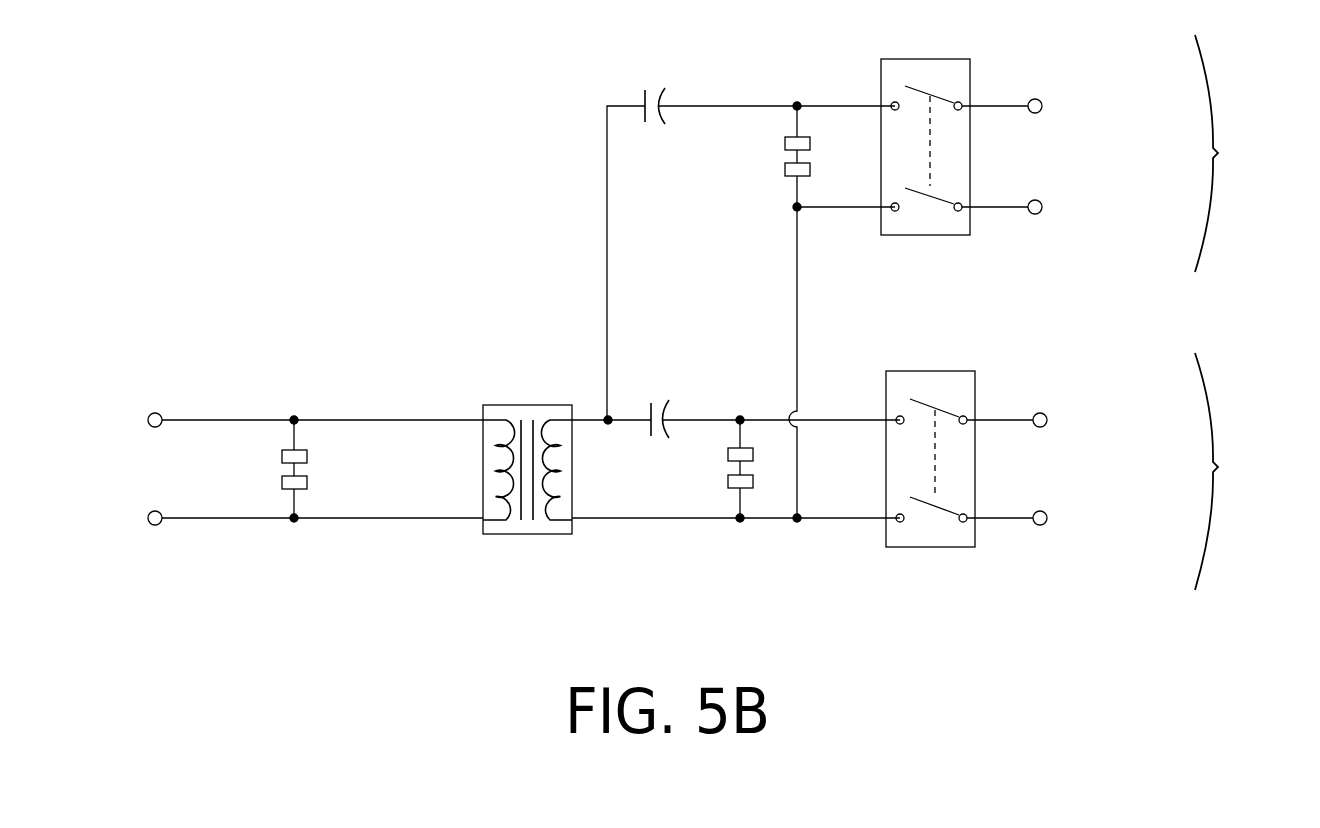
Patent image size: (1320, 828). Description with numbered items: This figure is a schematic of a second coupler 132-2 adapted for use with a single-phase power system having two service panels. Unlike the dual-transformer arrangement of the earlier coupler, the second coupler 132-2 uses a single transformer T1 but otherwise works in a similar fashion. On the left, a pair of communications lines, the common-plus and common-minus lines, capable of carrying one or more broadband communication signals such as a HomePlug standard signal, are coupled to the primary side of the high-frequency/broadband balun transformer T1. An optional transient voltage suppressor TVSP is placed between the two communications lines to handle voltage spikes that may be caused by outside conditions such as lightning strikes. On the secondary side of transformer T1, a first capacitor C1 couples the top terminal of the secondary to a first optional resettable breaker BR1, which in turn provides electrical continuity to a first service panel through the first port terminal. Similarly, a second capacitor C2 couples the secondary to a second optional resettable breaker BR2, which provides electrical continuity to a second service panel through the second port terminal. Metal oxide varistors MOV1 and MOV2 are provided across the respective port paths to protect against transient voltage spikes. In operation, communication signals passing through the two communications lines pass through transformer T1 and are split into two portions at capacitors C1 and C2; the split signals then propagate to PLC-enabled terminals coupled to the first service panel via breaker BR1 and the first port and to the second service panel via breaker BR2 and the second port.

The second coupler 132-2 is at (290, 150).
The first capacitor C1 is at (654, 92).
The second capacitor C2 is at (658, 405).
The metal oxide varistor MOV1 is at (765, 156).
The metal oxide varistor MOV2 is at (708, 469).
The transformer T1 is at (527, 456).
The transient voltage suppressor TVSP is at (261, 469).
The first resettable breaker BR1 is at (925, 131).
The second resettable breaker BR2 is at (930, 479).